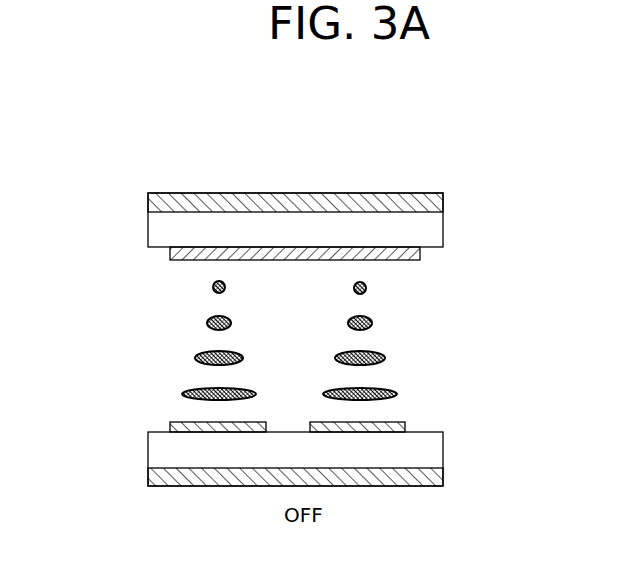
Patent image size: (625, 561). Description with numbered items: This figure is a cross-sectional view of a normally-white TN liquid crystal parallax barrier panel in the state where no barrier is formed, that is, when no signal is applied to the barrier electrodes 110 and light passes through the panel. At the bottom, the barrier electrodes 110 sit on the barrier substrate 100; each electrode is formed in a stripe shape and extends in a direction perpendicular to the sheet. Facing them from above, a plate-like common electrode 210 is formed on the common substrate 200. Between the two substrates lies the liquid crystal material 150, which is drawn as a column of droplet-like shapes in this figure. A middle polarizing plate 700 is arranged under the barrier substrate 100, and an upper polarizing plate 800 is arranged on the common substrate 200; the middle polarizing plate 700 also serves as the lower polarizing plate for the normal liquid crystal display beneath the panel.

The barrier substrate 100 is at (433, 452).
The barrier electrodes 110 is at (405, 428).
The droplets 150 is at (383, 359).
The common substrate 200 is at (425, 232).
The common electrode 210 is at (420, 253).
The middle polarizing plate 700 is at (150, 478).
The upper polarizing plate 800 is at (443, 203).